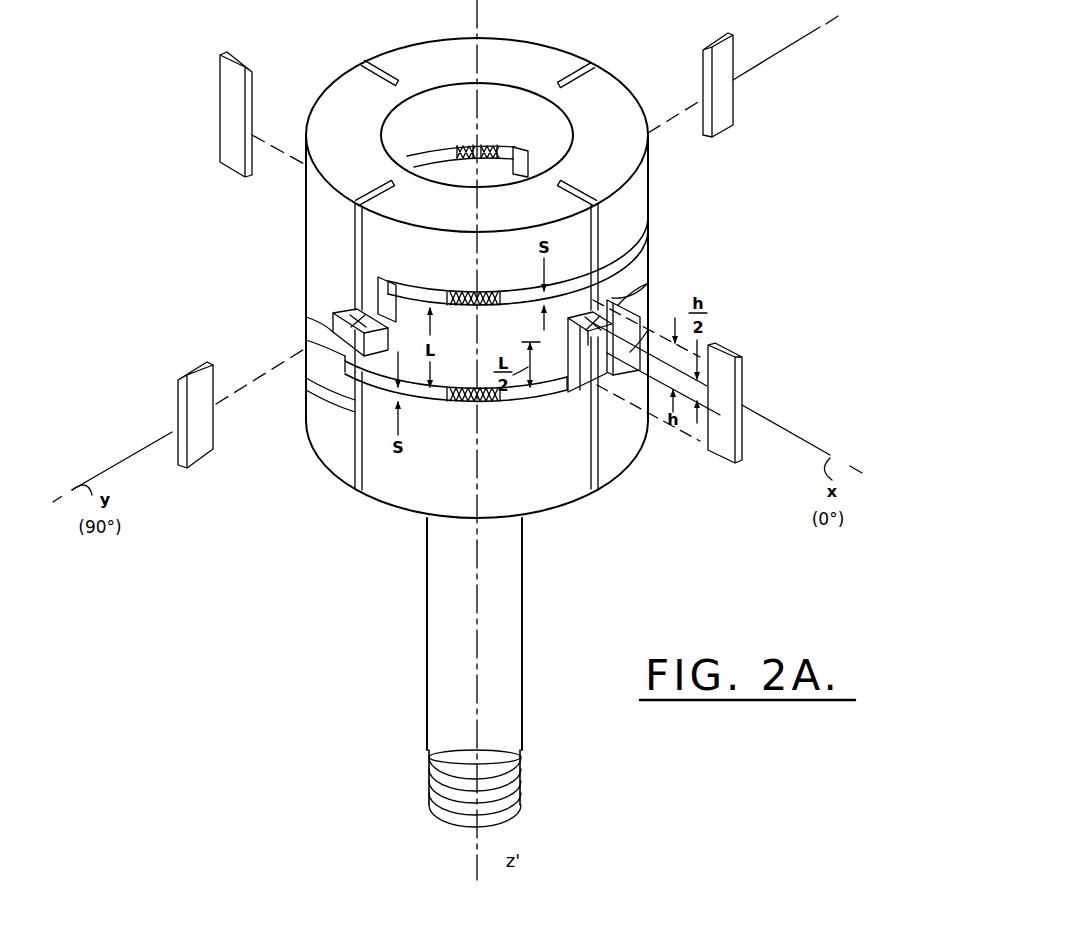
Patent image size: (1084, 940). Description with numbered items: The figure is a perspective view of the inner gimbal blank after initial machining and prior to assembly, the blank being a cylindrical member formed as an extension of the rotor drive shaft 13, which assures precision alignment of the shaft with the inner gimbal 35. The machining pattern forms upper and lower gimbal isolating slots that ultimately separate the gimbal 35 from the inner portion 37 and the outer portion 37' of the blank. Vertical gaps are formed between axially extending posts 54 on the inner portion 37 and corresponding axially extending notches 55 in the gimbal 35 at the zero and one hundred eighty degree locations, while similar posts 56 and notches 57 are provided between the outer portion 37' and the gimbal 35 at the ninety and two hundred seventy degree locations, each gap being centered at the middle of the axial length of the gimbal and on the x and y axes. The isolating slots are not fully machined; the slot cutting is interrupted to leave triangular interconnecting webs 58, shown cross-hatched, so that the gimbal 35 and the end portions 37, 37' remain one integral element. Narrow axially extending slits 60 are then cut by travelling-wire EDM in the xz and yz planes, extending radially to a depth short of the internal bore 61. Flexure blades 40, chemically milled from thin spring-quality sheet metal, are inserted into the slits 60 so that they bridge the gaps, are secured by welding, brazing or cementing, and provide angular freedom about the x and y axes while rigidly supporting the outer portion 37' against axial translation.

The rotor drive shaft 13 is at (522, 602).
The inner gimbal 35 is at (648, 258).
The inner cylindrical member 37 is at (488, 409).
The outer cylindrical member 37' is at (506, 174).
The flexure blade 40 is at (220, 107).
The axially extending post 54 is at (572, 382).
The axially extending notch 55 is at (606, 303).
The post 56 is at (378, 302).
The notch 57 is at (320, 300).
The interconnecting web 58 is at (486, 147).
The slit 60 is at (392, 184).
The internal bore 61 is at (517, 101).